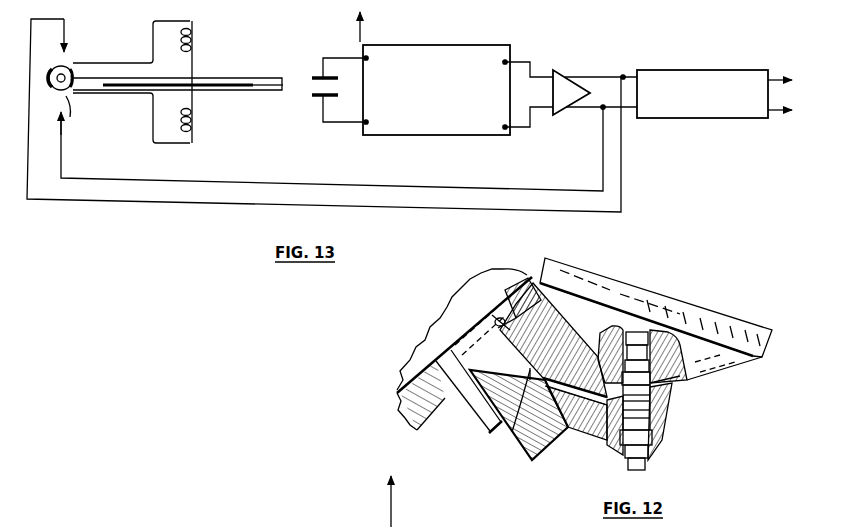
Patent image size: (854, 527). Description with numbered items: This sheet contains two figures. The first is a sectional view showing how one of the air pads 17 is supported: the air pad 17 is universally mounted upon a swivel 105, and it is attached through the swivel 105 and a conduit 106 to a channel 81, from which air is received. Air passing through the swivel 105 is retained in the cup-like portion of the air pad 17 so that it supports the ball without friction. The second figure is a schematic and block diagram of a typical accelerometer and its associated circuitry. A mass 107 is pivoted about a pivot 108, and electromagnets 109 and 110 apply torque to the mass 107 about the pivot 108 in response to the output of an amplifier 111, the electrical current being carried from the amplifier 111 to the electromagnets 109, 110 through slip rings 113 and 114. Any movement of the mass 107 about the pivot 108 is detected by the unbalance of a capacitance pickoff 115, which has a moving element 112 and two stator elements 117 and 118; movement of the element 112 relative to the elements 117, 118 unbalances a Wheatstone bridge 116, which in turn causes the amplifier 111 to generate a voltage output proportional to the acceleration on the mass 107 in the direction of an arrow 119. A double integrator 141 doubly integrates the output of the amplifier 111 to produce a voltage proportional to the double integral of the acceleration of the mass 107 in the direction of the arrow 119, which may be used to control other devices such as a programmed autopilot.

In FIG. 12, the air pad 17 is at (717, 328).
In FIG. 12, the channel 81 is at (522, 412).
In FIG. 12, the swivel 105 is at (630, 333).
In FIG. 12, the conduit 106 is at (660, 381).
In FIG. 13, the mass 107 is at (234, 79).
In FIG. 13, the pivot 108 is at (75, 84).
In FIG. 13, the electromagnet 109 is at (193, 35).
In FIG. 13, the electromagnet 110 is at (192, 125).
In FIG. 13, the amplifier 111 is at (558, 74).
In FIG. 13, the moving element 112 is at (327, 76).
In FIG. 13, the slip ring 113 is at (65, 65).
In FIG. 13, the slip ring 114 is at (77, 120).
In FIG. 13, the capacitance pickoff 115 is at (300, 97).
In FIG. 13, the Wheatstone bridge 116 is at (388, 51).
In FIG. 13, the stator element 117 is at (317, 75).
In FIG. 13, the stator element 118 is at (323, 98).
In FIG. 13, the arrow 119 is at (362, 32).
In FIG. 12, the arrow 119 is at (392, 507).
In FIG. 13, the double integrator 141 is at (653, 78).